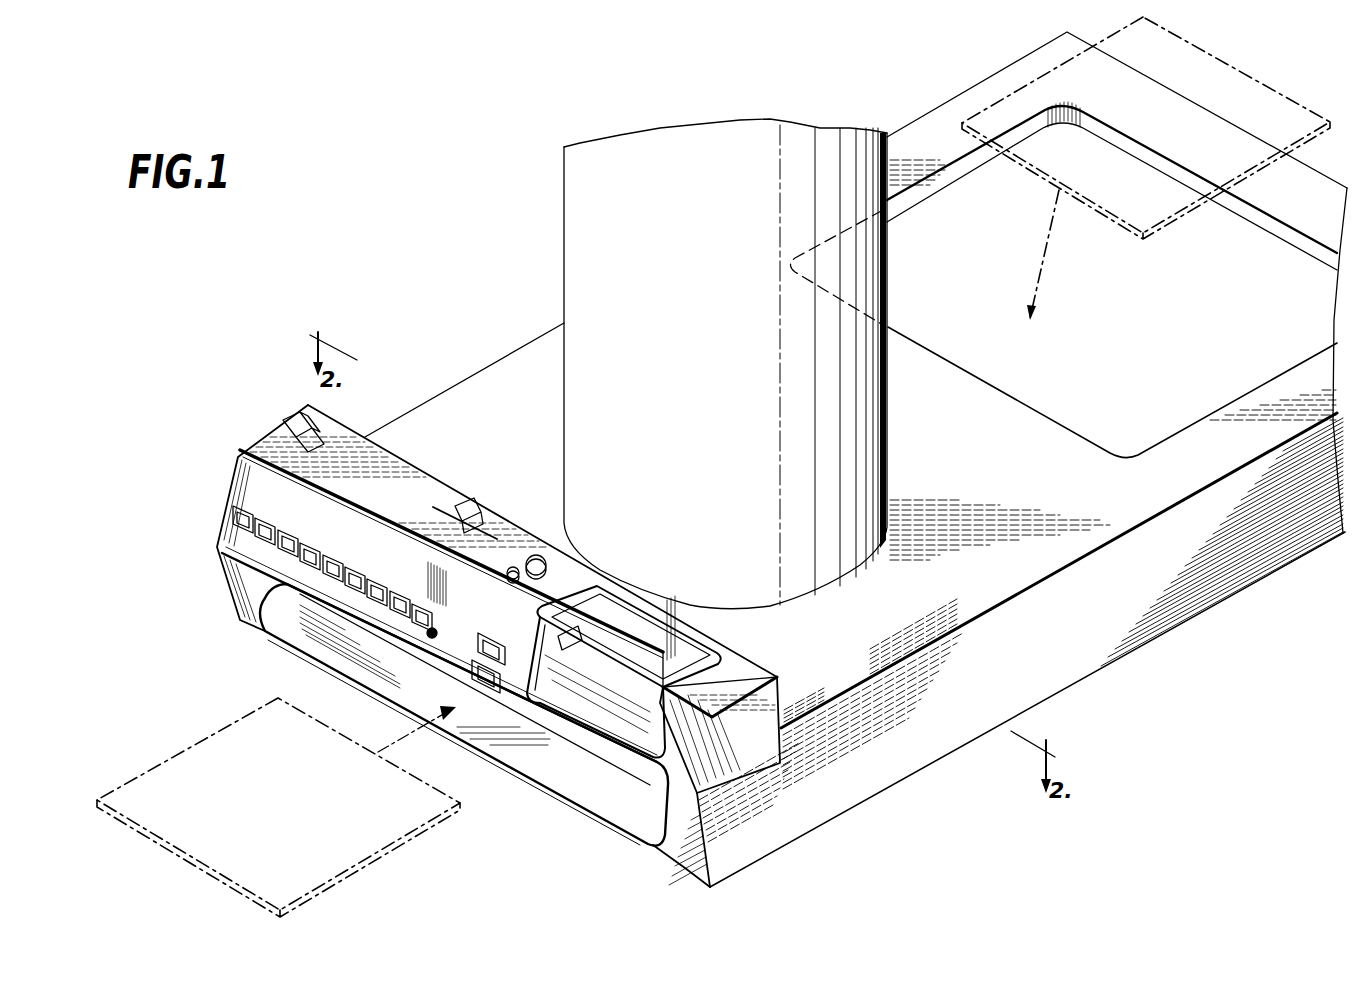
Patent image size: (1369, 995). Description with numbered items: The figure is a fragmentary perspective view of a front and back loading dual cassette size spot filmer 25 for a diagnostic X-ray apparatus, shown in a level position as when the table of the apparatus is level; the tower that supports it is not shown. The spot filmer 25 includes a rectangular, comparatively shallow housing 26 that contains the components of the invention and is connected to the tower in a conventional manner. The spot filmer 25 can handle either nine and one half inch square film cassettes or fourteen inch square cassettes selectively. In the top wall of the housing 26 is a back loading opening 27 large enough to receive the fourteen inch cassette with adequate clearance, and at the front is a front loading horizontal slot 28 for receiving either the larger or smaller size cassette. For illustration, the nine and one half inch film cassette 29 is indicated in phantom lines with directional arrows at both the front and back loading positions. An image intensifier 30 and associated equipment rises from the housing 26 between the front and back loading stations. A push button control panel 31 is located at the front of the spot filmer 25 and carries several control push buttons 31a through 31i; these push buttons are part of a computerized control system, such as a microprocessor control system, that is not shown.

The spot filmer 25 is at (473, 372).
The housing 26 is at (1135, 611).
The back loading opening 27 is at (1066, 428).
The front loading horizontal slot 28 is at (298, 630).
The film cassette 29 is at (1212, 55).
The image intensifier 30 is at (566, 388).
The push button control panel 31 is at (248, 476).
The control push button 31a is at (246, 519).
The control push button 31i is at (424, 612).